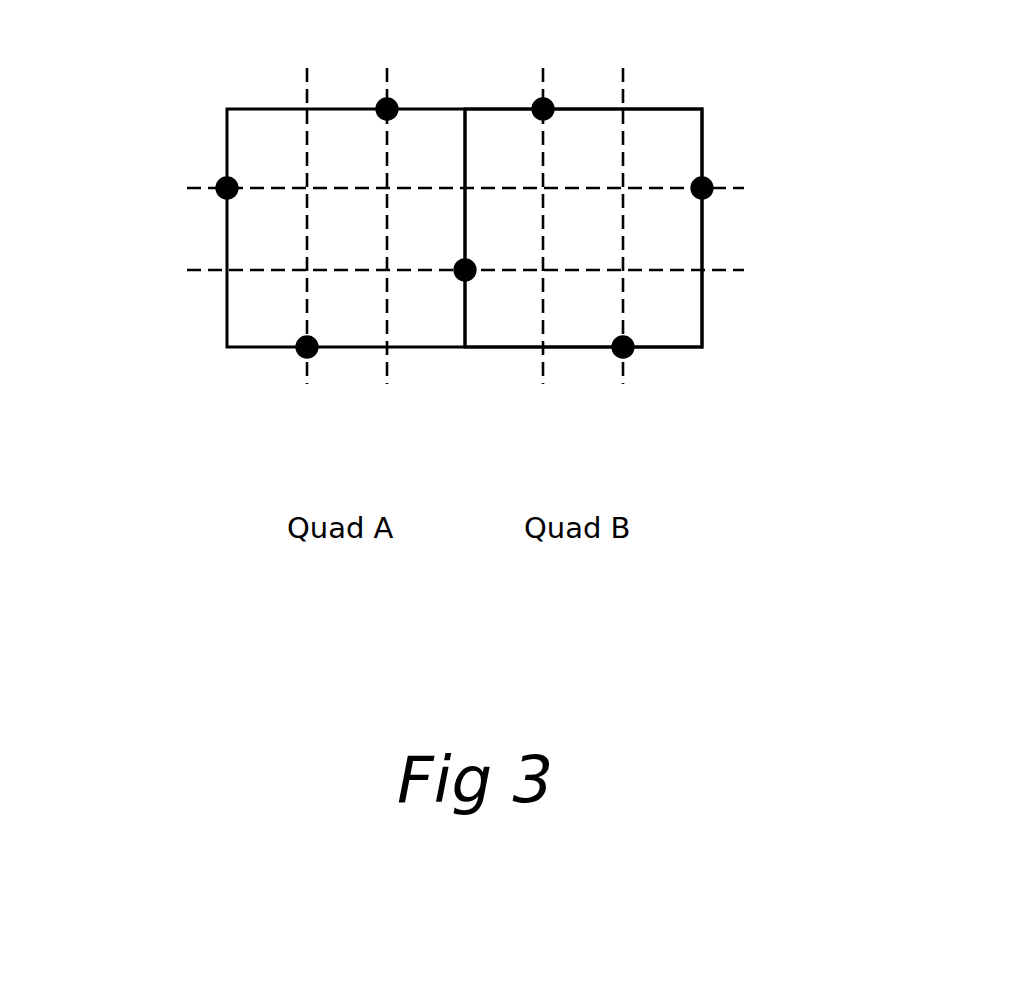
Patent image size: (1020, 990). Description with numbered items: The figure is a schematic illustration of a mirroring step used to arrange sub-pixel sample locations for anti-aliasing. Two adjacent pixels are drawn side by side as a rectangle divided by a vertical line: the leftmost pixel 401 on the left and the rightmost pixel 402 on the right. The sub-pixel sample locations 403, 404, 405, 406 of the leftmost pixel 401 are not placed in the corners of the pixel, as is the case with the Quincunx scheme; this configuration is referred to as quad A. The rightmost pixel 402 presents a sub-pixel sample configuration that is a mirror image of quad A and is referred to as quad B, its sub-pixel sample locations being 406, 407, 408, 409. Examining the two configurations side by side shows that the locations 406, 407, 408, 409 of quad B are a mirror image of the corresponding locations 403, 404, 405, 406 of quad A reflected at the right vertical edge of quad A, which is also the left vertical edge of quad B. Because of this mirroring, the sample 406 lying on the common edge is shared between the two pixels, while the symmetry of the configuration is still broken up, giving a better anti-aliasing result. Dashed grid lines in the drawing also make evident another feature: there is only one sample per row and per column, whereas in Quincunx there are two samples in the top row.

The leftmost pixel 401 is at (276, 133).
The rightmost pixel 402 is at (675, 287).
The sub-pixel sample location 403 is at (392, 105).
The sub-pixel sample location 404 is at (216, 190).
The sub-pixel sample location 405 is at (302, 350).
The shared sub-pixel sample location 406 is at (458, 276).
The sub-pixel sample location 407 is at (549, 105).
The sub-pixel sample location 408 is at (710, 186).
The sub-pixel sample location 409 is at (618, 348).